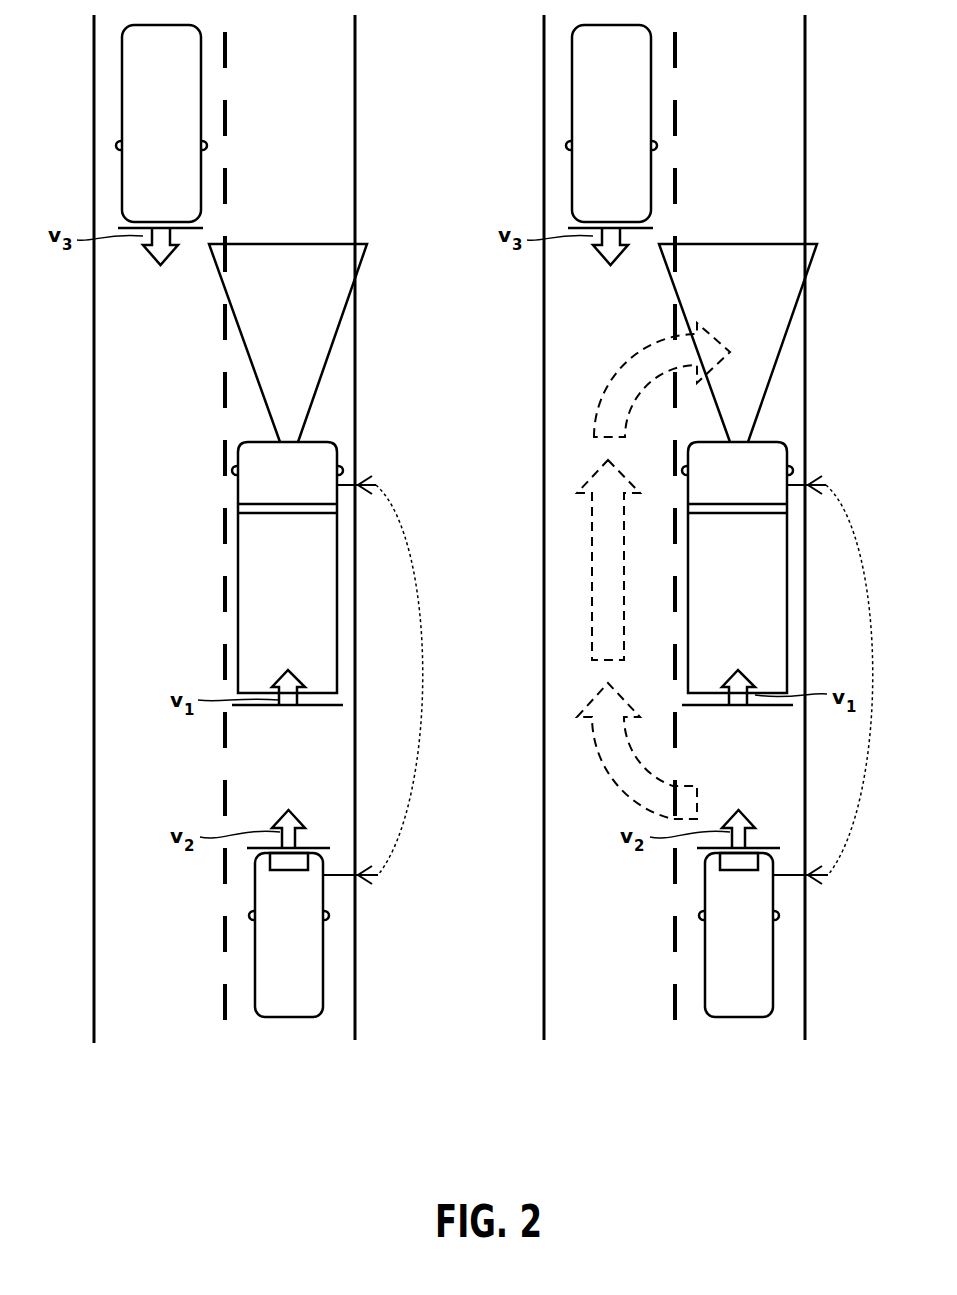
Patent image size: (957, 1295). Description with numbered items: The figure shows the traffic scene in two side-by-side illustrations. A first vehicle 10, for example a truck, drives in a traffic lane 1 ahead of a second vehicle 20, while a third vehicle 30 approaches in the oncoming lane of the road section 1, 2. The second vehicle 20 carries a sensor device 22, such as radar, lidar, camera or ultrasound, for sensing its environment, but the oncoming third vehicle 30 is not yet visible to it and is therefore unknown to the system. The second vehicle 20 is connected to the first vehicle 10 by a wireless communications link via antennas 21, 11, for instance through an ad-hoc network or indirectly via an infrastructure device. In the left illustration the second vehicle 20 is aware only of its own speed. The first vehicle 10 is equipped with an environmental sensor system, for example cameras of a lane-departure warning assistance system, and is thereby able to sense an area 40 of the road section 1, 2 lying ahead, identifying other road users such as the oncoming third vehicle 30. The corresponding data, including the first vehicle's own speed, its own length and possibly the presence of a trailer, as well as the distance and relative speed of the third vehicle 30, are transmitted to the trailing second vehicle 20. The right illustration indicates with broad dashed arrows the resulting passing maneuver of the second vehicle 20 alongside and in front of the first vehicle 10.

The traffic lane 1 is at (293, 1035).
The road section lane 2 is at (160, 1035).
The first vehicle 10 is at (303, 585).
The antenna 11 is at (363, 493).
The second vehicle 20 is at (304, 957).
The antenna 21 is at (365, 872).
The sensor device 22 is at (287, 860).
The third vehicle 30 is at (177, 138).
The area 40 is at (321, 377).